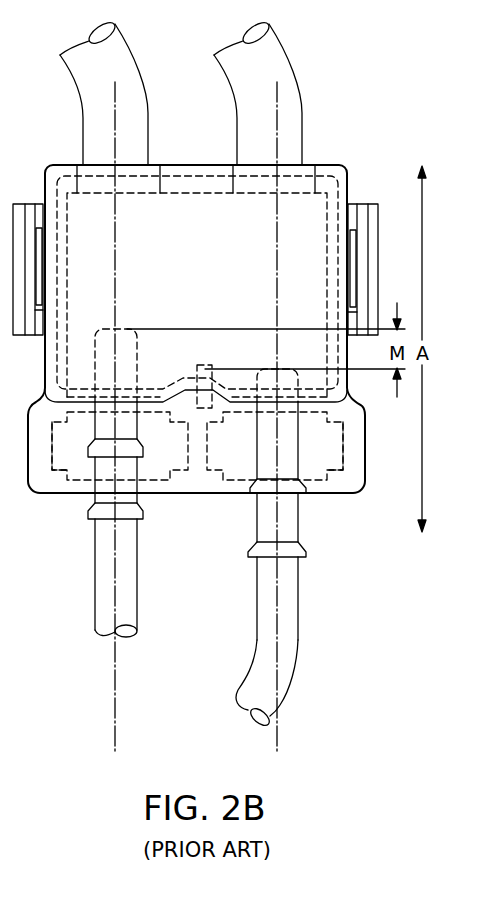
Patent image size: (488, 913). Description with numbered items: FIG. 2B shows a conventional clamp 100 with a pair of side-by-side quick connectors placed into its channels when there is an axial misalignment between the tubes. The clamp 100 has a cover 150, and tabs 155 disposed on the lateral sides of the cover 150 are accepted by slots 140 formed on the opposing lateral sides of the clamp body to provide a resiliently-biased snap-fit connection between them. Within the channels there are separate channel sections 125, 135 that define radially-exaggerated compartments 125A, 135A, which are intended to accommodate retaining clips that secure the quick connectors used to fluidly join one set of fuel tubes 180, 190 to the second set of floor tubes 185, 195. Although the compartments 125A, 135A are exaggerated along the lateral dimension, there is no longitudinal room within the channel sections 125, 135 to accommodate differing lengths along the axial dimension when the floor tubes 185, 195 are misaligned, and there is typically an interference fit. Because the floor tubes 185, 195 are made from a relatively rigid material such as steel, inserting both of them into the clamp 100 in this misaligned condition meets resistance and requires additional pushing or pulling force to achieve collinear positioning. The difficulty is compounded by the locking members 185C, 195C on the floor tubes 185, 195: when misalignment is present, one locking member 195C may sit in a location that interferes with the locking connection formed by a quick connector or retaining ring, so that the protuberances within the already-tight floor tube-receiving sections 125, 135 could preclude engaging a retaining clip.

The clamp 100 is at (372, 98).
The fuel tube 180 is at (125, 50).
The fuel tube 190 is at (279, 57).
The tab 155 is at (352, 232).
The slot 140 is at (377, 208).
The cover 150 is at (216, 285).
The channel section 135 is at (161, 455).
The radially-exaggerated compartment 135A is at (62, 465).
The channel section 125 is at (233, 453).
The radially-exaggerated compartment 125A is at (315, 453).
The floor tube 185 is at (108, 483).
The locking member 185C is at (98, 514).
The floor tube 195 is at (306, 549).
The locking member 195C is at (297, 492).